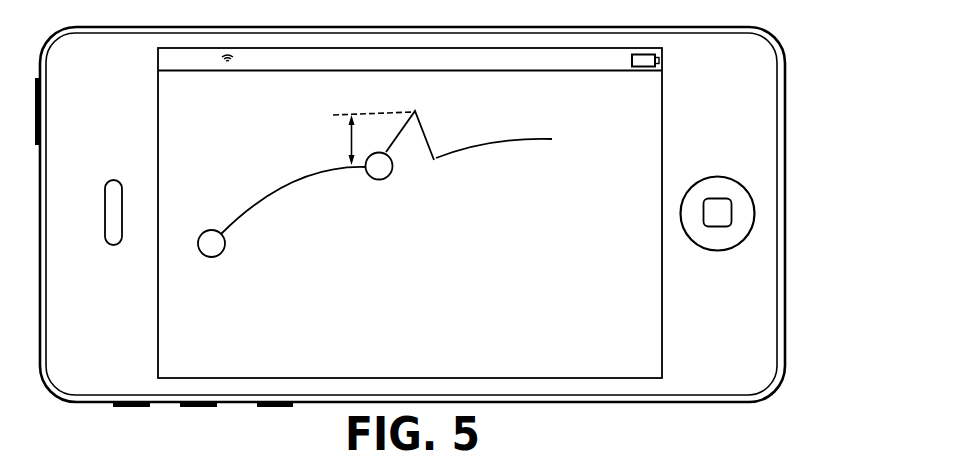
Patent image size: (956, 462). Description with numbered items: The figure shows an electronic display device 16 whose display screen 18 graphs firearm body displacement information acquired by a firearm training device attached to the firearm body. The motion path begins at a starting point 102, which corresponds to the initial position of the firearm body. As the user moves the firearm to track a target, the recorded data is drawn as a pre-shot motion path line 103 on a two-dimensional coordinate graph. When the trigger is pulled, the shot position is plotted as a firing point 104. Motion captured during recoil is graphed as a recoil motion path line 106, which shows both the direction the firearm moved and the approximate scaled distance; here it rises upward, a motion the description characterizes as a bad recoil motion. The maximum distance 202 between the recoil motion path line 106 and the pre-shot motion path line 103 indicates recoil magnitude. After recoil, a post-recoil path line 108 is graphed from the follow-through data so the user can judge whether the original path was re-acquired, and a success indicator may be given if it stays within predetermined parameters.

The electronic display device 16 is at (787, 120).
The display screen 18 is at (622, 355).
The starting point 102 is at (212, 257).
The pre-shot motion path line 103 is at (288, 183).
The firing point 104 is at (381, 180).
The recoil motion path line 106 is at (397, 127).
The post-recoil path line 108 is at (503, 141).
The maximum distance 202 is at (350, 138).